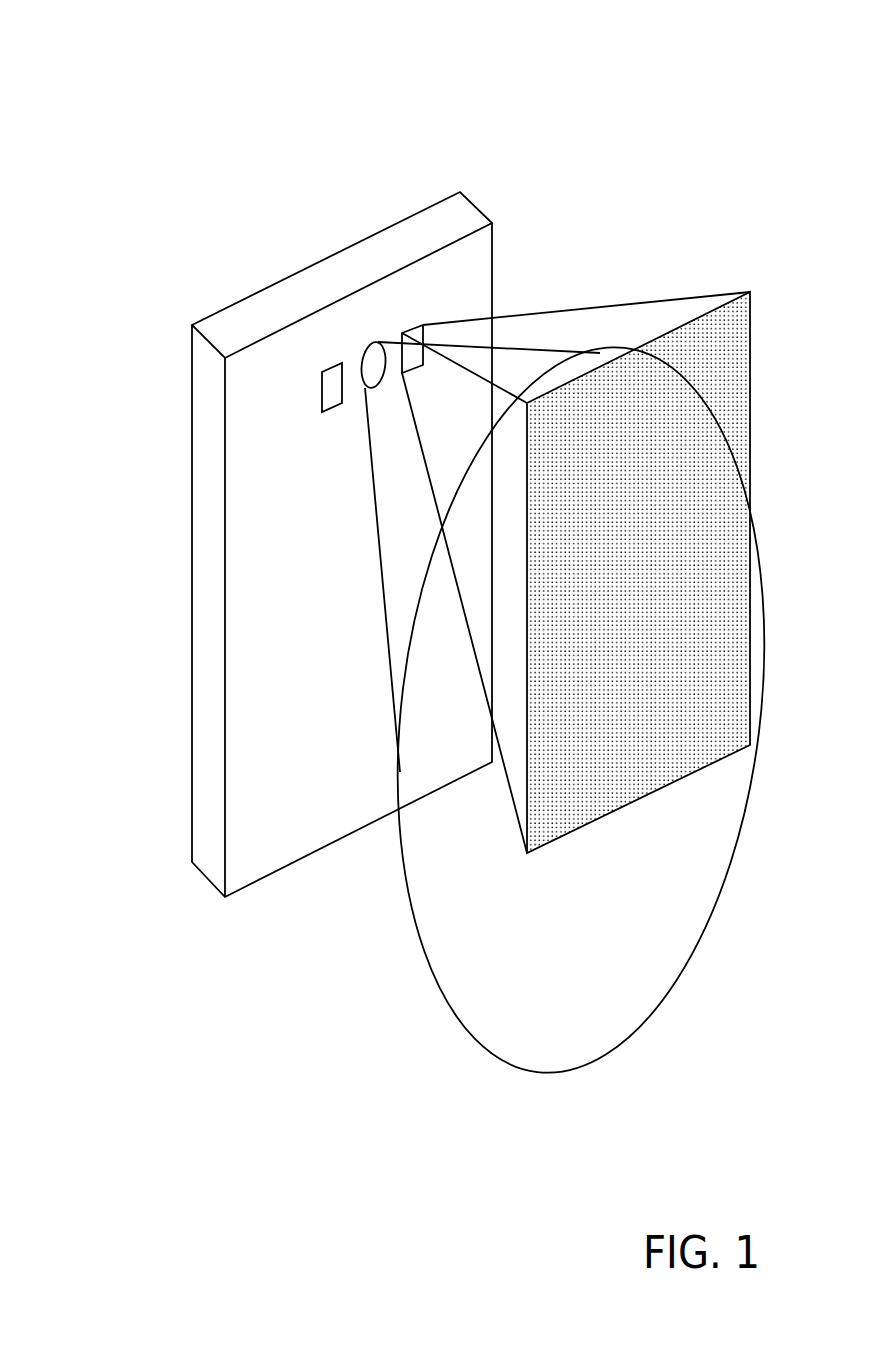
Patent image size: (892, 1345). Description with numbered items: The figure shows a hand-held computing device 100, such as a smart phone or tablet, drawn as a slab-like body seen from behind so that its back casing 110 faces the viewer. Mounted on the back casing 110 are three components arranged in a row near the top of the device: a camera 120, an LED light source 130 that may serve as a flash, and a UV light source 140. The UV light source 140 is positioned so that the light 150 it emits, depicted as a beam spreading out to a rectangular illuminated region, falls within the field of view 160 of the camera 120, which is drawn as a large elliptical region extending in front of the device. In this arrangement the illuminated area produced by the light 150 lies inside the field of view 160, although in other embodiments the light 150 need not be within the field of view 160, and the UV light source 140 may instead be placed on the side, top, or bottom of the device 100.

The hand-held computing device 100 is at (385, 72).
The back casing 110 is at (486, 247).
The camera 120 is at (374, 343).
The LED light source 130 is at (322, 372).
The UV light source 140 is at (402, 333).
The light 150 is at (560, 313).
The field of view 160 is at (432, 970).